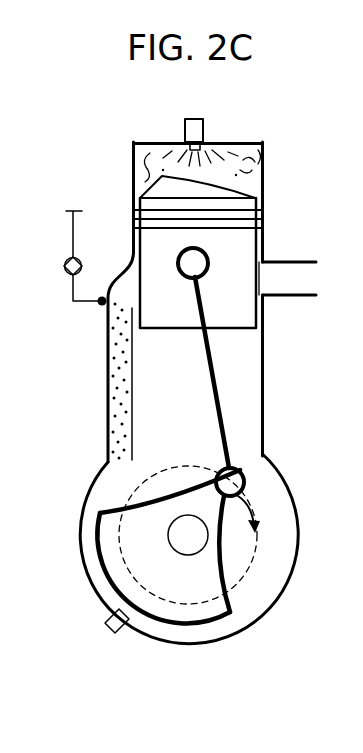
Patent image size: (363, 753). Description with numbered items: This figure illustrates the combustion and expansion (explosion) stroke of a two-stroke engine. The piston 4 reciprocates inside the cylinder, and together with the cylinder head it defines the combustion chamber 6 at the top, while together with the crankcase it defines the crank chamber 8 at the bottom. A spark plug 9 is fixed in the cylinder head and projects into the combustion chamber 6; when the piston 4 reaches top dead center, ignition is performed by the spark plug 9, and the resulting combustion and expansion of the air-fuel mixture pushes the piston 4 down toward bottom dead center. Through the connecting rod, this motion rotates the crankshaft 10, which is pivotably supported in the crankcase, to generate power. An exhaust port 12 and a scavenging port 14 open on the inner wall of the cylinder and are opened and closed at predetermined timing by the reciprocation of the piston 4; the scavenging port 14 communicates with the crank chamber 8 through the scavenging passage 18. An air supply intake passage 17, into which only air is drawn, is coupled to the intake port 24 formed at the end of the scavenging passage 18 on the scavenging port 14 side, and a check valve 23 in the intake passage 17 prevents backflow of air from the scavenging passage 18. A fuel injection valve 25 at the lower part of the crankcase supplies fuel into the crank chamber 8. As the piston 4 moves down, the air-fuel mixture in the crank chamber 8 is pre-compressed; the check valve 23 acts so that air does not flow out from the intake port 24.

The piston 4 is at (233, 258).
The combustion chamber 6 is at (238, 157).
The crank chamber 8 is at (262, 573).
The spark plug 9 is at (196, 127).
The crankshaft 10 is at (188, 535).
The exhaust port 12 is at (262, 281).
The scavenging port 14 is at (128, 292).
The intake passage 17 is at (72, 230).
The scavenging passage 18 is at (118, 384).
The check valve 23 is at (66, 270).
The intake port 24 is at (98, 306).
The fuel injection valve 25 is at (121, 635).